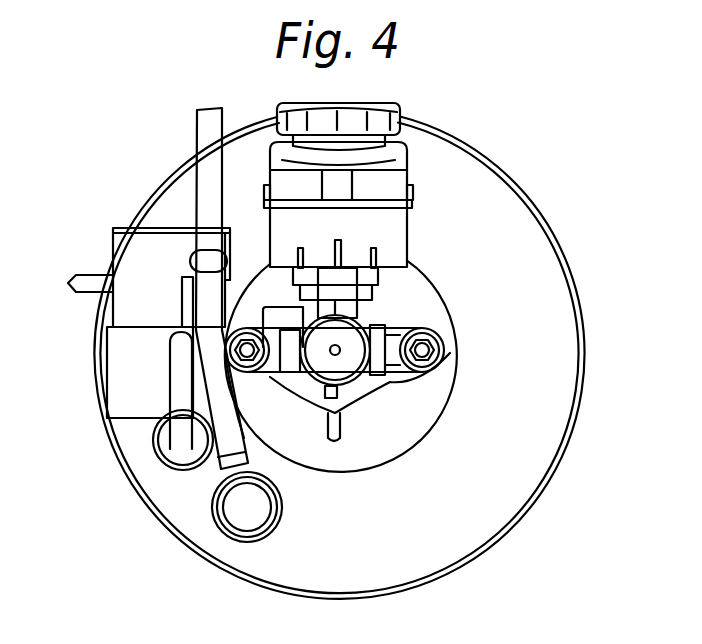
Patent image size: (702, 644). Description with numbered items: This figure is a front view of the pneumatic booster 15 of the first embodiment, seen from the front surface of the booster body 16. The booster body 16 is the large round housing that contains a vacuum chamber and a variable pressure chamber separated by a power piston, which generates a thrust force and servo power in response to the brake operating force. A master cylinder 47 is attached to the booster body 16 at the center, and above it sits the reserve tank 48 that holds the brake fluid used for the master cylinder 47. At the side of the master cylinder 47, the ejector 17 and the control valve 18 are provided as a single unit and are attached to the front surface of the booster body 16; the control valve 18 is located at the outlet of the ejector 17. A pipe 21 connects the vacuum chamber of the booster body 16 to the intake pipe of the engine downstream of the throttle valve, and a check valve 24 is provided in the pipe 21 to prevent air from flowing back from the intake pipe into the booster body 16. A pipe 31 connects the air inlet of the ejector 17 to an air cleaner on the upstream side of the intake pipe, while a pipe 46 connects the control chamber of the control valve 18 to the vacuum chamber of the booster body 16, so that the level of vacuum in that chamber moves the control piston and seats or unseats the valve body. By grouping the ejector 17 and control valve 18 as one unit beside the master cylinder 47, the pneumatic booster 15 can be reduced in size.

The pneumatic booster 15 is at (522, 141).
The booster body 16 is at (533, 412).
The ejector 17 is at (127, 247).
The control valve 18 is at (185, 246).
The pipe 21 is at (208, 152).
The check valve 24 is at (243, 510).
The pipe 31 is at (92, 282).
The pipe 46 is at (183, 432).
The master cylinder 47 is at (375, 318).
The reserve tank 48 is at (391, 167).